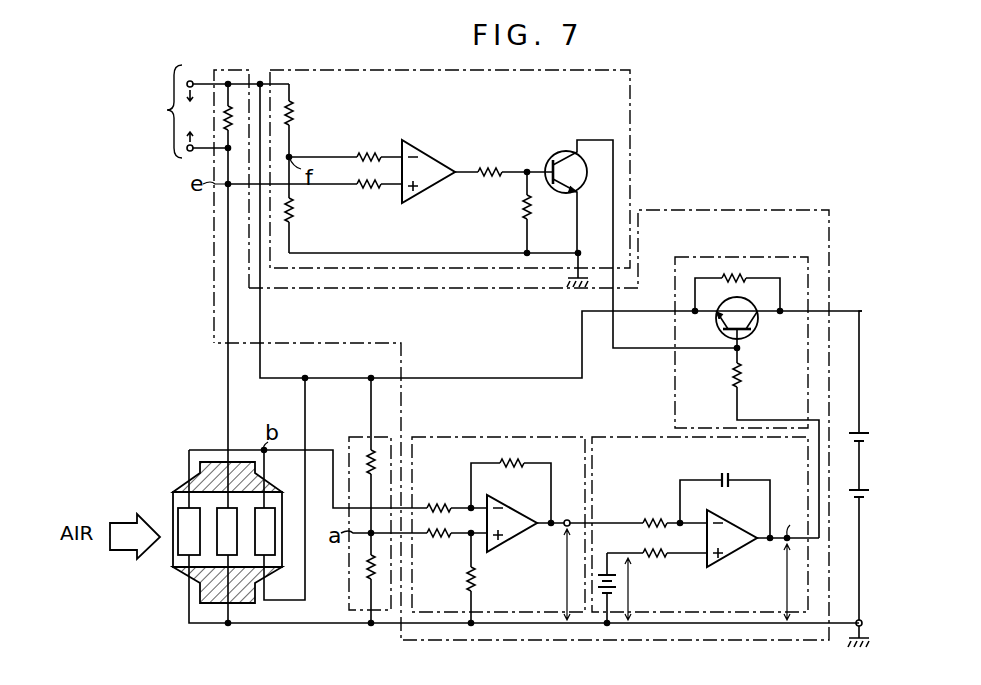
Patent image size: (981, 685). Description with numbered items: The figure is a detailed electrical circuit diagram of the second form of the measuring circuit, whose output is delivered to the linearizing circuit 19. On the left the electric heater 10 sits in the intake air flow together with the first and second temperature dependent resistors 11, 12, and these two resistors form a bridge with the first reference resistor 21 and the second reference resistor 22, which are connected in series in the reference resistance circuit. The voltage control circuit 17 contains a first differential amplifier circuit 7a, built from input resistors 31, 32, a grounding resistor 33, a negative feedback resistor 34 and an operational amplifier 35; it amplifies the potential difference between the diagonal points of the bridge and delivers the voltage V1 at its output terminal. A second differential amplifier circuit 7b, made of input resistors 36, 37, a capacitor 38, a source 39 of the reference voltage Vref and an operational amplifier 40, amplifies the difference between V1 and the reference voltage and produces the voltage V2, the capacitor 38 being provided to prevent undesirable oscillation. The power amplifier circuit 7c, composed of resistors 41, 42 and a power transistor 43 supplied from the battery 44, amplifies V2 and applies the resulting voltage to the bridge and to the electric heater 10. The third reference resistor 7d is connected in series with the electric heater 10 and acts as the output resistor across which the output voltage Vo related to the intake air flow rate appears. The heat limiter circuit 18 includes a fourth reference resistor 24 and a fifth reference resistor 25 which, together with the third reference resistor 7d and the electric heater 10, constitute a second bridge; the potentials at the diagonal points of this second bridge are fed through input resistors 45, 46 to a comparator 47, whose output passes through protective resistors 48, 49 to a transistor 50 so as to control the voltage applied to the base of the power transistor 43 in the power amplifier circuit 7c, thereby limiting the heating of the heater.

The linearizing circuit 19 is at (187, 111).
The output resistor 7d is at (228, 112).
The heat limiter circuit 18 is at (644, 98).
The fourth reference resistor 24 is at (294, 115).
The fifth reference resistor 25 is at (294, 213).
The input resistor 45 is at (368, 157).
The input resistor 46 is at (371, 188).
The comparator 47 is at (427, 160).
The protective resistor 48 is at (487, 160).
The protective resistor 49 is at (522, 212).
The transistor 50 is at (550, 155).
The voltage control circuit 17 is at (730, 210).
The power amplifier circuit 7c is at (784, 257).
The resistor 42 is at (734, 272).
The power transistor 43 is at (750, 333).
The resistor 41 is at (739, 383).
The battery 44 is at (860, 437).
The first reference resistor 21 is at (366, 450).
The second reference resistor 22 is at (366, 566).
The first differential amplifier circuit 7a is at (522, 436).
The second differential amplifier circuit 7b is at (662, 436).
The input resistor 31 is at (444, 504).
The input resistor 32 is at (440, 536).
The grounding resistor 33 is at (472, 572).
The negative feedback resistor 34 is at (512, 464).
The operational amplifier 35 is at (515, 537).
The input resistor 36 is at (652, 520).
The input resistor 37 is at (651, 553).
The capacitor 38 is at (726, 480).
The reference voltage source 39 is at (606, 573).
The operational amplifier 40 is at (732, 542).
The electric heater 10 is at (225, 557).
The first temperature dependent resistor 11 is at (270, 545).
The second temperature dependent resistor 12 is at (184, 518).